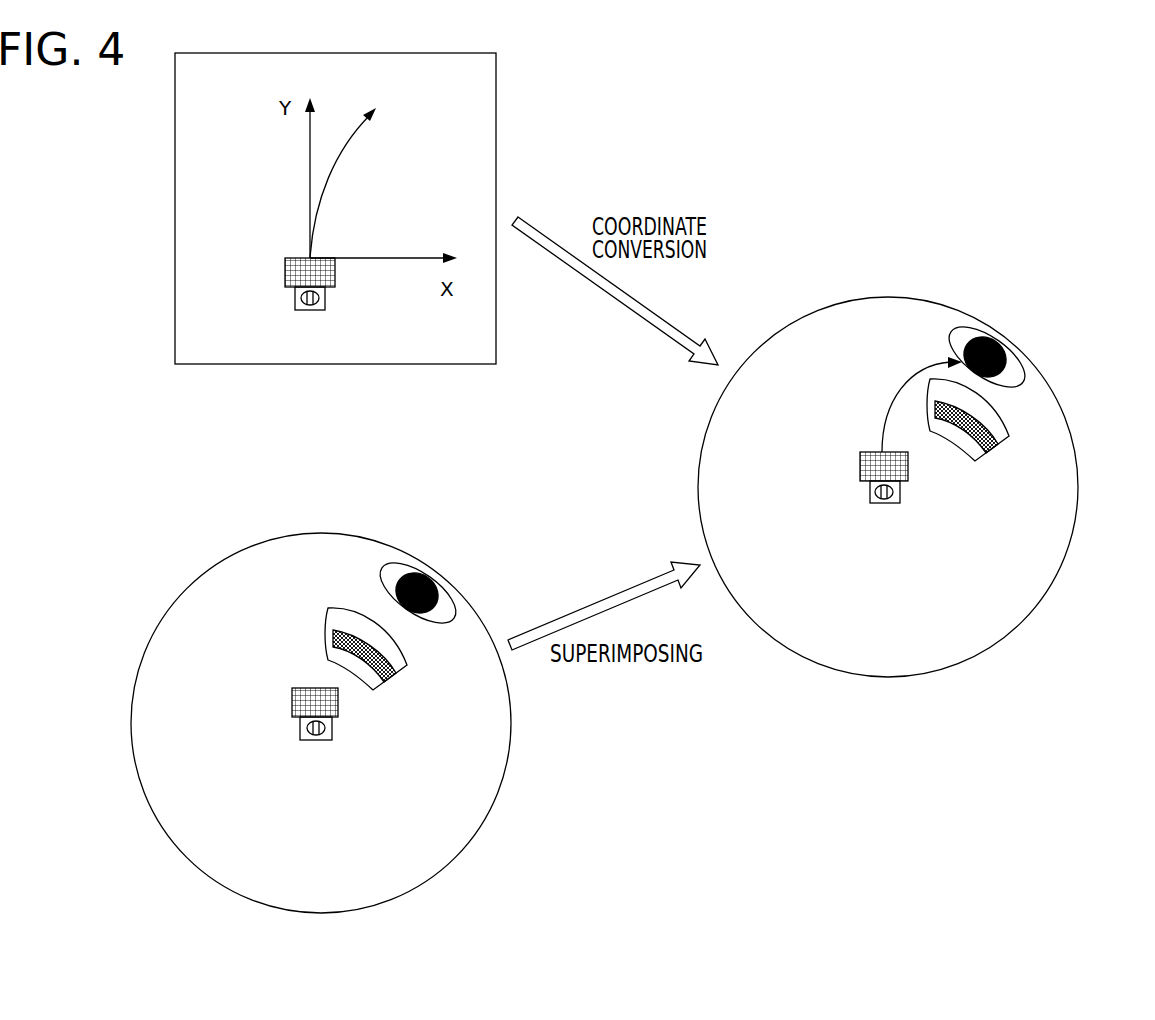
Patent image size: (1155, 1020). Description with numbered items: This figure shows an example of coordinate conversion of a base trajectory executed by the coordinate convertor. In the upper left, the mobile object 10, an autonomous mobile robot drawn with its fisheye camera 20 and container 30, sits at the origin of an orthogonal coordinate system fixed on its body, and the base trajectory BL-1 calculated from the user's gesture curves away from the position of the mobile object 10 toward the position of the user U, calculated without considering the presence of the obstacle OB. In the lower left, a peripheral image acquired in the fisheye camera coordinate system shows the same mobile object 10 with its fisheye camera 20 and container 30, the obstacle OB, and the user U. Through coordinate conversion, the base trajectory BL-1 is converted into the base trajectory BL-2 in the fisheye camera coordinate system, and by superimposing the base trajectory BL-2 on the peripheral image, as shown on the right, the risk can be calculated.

The mobile object 10 is at (295, 297).
The fisheye camera 20 is at (319, 300).
The container 30 is at (285, 265).
The base trajectory in the orthogonal coordinate system BL-1 is at (337, 157).
The base trajectory in the fisheye camera coordinate system BL-2 is at (882, 435).
The obstacle OB is at (407, 665).
The user U is at (440, 597).